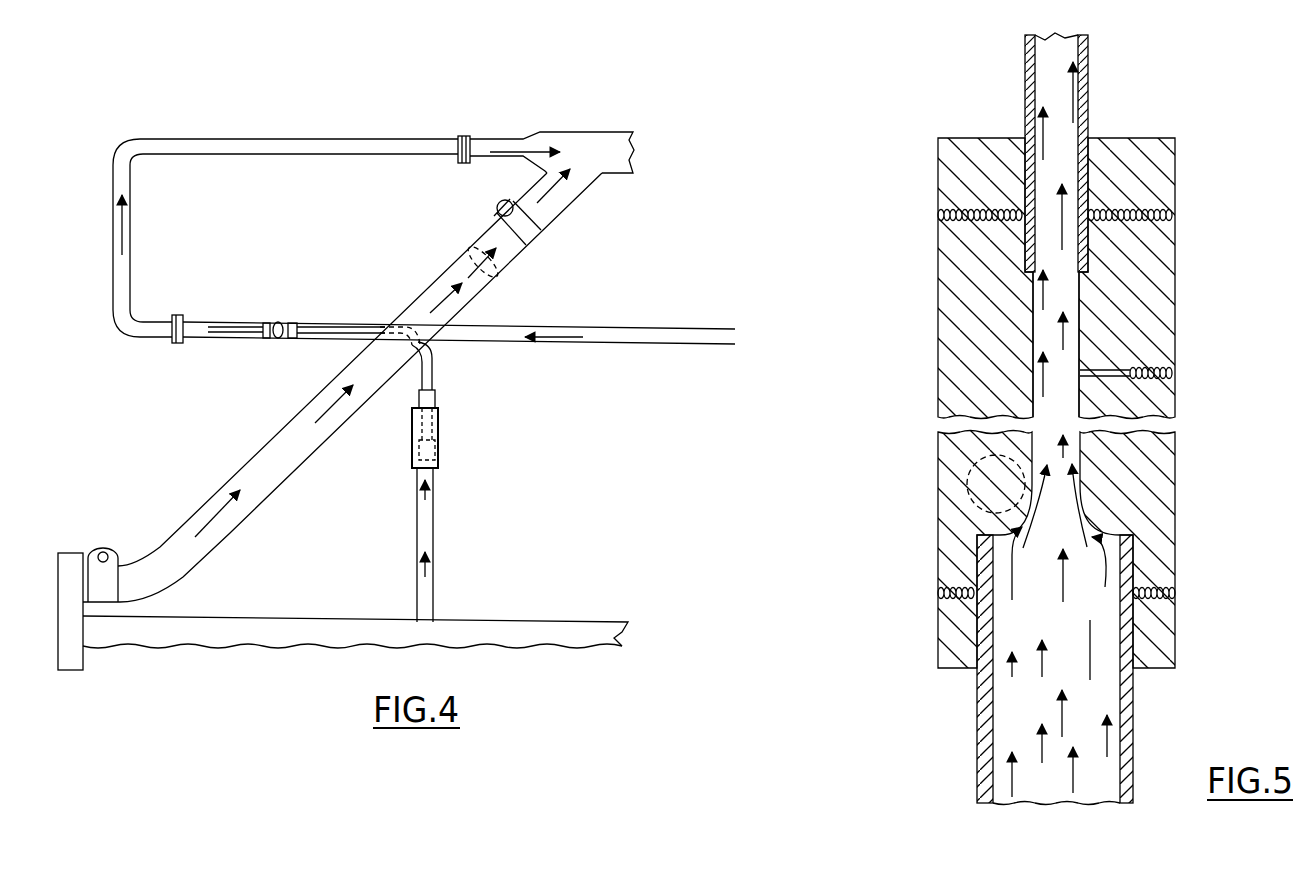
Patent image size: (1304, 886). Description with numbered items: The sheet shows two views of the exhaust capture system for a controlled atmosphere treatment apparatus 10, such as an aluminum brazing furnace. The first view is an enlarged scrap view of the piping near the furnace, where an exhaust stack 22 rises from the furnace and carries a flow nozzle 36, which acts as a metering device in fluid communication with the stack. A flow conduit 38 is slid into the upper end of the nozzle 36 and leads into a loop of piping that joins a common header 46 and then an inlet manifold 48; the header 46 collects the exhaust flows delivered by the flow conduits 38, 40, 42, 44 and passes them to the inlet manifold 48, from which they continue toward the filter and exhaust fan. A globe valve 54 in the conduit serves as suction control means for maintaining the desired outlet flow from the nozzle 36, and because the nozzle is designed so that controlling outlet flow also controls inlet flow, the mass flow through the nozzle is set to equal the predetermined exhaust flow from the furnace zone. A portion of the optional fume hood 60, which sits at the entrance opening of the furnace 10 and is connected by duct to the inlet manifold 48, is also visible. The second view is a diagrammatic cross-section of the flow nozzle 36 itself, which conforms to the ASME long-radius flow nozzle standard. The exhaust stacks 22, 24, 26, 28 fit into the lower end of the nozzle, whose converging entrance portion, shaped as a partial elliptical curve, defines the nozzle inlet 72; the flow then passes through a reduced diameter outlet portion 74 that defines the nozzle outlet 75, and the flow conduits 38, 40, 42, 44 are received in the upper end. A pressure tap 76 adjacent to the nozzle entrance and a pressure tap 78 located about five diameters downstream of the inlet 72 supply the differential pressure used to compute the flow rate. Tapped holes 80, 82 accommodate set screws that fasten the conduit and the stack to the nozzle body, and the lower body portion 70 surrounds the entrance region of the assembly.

In FIG. 4, the controlled atmosphere treatment apparatus 10 is at (518, 622).
In FIG. 4, the exhaust stack 22 is at (437, 512).
In FIG. 5, the exhaust stack 22 is at (994, 670).
In FIG. 5, the exhaust stack 24 is at (994, 670).
In FIG. 5, the exhaust stack 26 is at (994, 670).
In FIG. 5, the exhaust stack 28 is at (994, 670).
In FIG. 4, the flow nozzle 36 is at (440, 430).
In FIG. 5, the flow nozzle 36 is at (1031, 403).
In FIG. 4, the flow conduit 38 is at (437, 363).
In FIG. 5, the flow conduit 38 is at (1142, 152).
In FIG. 5, the flow conduit 40 is at (1142, 152).
In FIG. 5, the flow conduit 42 is at (1142, 152).
In FIG. 5, the flow conduit 44 is at (1090, 85).
In FIG. 4, the common header 46 is at (650, 325).
In FIG. 4, the inlet manifold 48 is at (596, 138).
In FIG. 4, the globe valve 54 is at (280, 340).
In FIG. 4, the fume hood 60 is at (72, 553).
In FIG. 5, the lower housing body 70 is at (1125, 520).
In FIG. 5, the nozzle inlet 72 is at (1080, 518).
In FIG. 5, the reduced diameter outlet portion 74 is at (993, 415).
In FIG. 5, the nozzle outlet 75 is at (1050, 322).
In FIG. 5, the pressure tap 76 is at (1133, 752).
In FIG. 5, the pressure tap 78 is at (1150, 370).
In FIG. 5, the tapped hole 80 is at (992, 209).
In FIG. 5, the tapped hole 82 is at (945, 590).